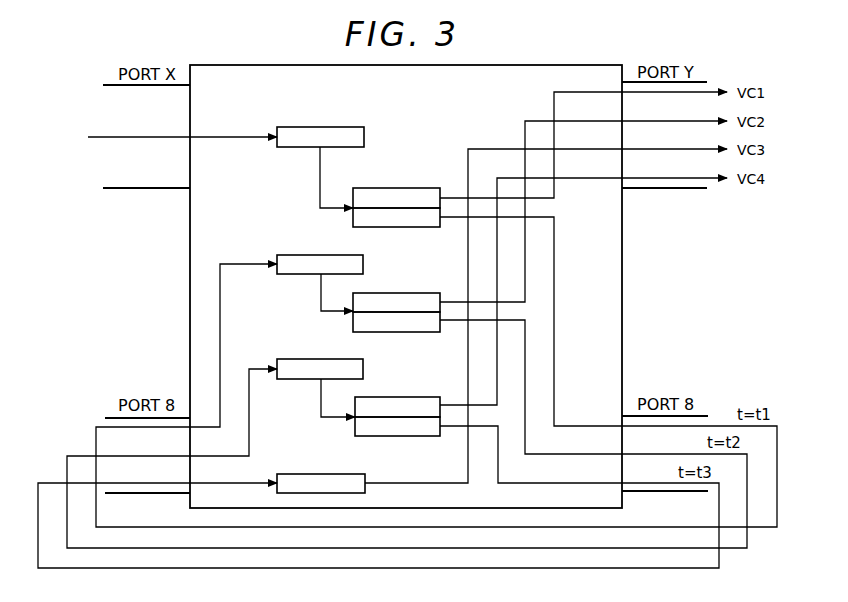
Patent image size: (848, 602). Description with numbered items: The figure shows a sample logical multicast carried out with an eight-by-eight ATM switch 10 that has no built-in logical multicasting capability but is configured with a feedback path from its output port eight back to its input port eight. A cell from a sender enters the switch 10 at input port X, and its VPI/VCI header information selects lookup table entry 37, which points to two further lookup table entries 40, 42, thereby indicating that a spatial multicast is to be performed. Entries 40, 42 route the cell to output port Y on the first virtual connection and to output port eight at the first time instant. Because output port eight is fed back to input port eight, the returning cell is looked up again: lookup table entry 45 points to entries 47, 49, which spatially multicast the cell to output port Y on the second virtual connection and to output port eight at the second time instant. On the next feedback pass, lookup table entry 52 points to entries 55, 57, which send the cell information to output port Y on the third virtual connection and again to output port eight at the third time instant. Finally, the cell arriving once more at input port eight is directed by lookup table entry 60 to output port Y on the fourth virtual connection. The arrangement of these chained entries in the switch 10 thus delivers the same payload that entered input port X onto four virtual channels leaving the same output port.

The switch 10 is at (190, 296).
The lookup table entry 37 is at (318, 127).
The lookup table entry 40 is at (395, 194).
The lookup table entry 42 is at (418, 221).
The lookup table entry 45 is at (310, 255).
The lookup table entry 47 is at (398, 297).
The lookup table entry 49 is at (418, 326).
The lookup table entry 52 is at (310, 359).
The lookup table entry 55 is at (400, 399).
The lookup table entry 57 is at (420, 431).
The lookup table entry 60 is at (318, 474).